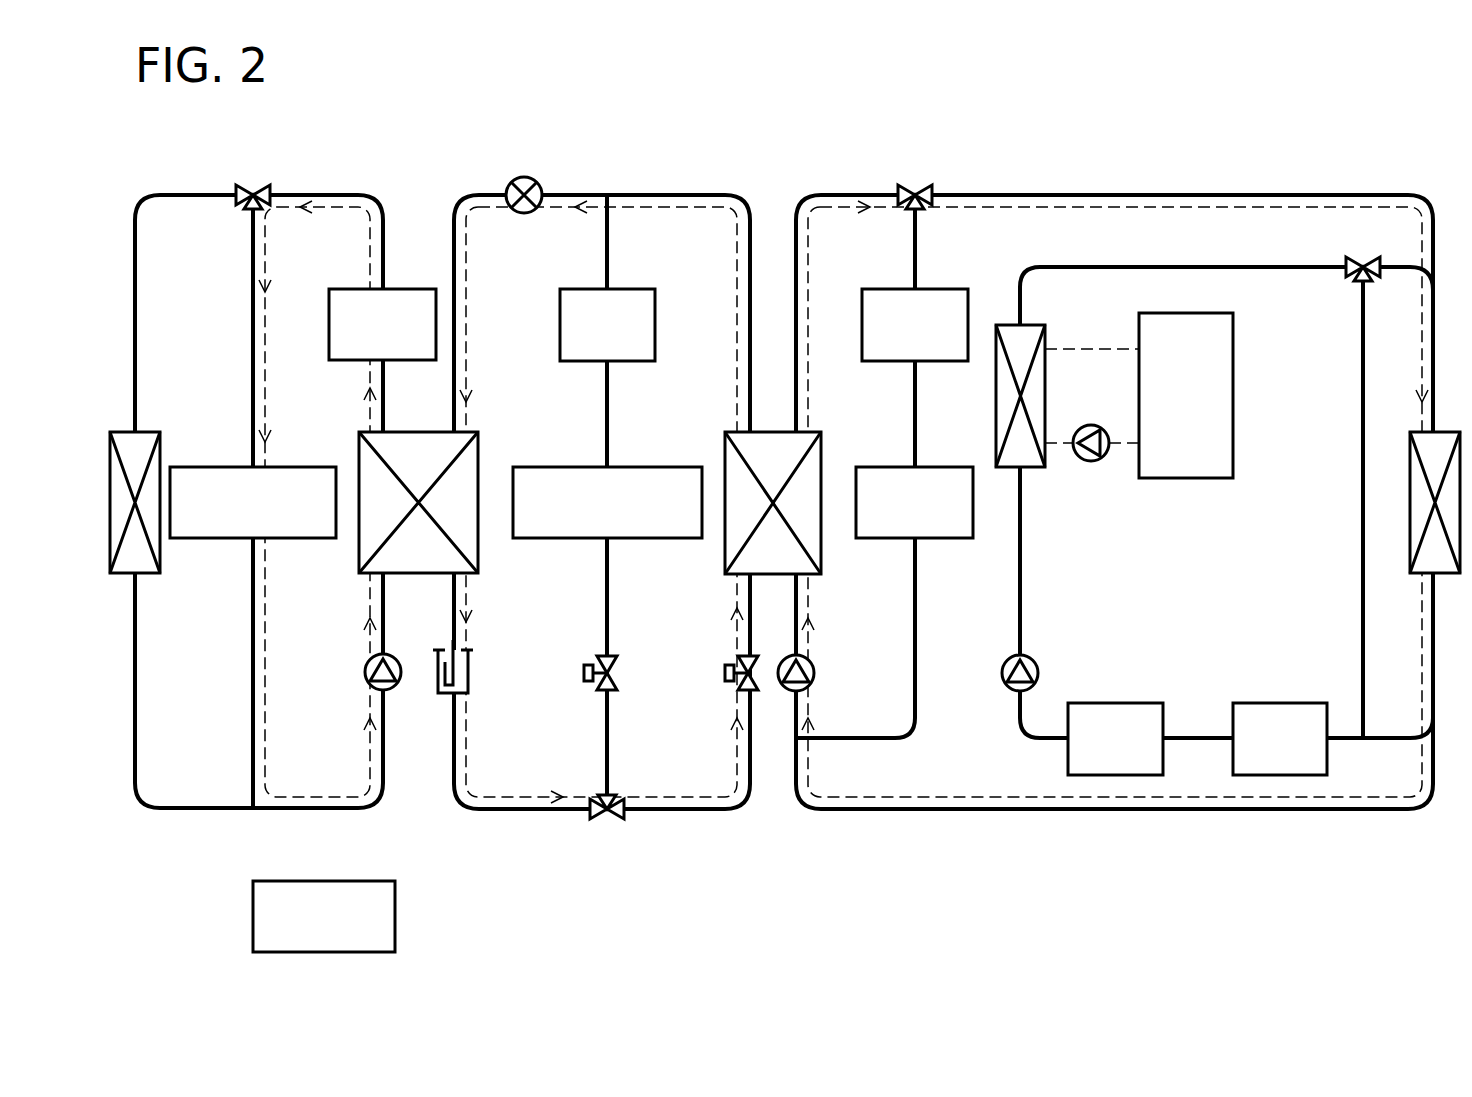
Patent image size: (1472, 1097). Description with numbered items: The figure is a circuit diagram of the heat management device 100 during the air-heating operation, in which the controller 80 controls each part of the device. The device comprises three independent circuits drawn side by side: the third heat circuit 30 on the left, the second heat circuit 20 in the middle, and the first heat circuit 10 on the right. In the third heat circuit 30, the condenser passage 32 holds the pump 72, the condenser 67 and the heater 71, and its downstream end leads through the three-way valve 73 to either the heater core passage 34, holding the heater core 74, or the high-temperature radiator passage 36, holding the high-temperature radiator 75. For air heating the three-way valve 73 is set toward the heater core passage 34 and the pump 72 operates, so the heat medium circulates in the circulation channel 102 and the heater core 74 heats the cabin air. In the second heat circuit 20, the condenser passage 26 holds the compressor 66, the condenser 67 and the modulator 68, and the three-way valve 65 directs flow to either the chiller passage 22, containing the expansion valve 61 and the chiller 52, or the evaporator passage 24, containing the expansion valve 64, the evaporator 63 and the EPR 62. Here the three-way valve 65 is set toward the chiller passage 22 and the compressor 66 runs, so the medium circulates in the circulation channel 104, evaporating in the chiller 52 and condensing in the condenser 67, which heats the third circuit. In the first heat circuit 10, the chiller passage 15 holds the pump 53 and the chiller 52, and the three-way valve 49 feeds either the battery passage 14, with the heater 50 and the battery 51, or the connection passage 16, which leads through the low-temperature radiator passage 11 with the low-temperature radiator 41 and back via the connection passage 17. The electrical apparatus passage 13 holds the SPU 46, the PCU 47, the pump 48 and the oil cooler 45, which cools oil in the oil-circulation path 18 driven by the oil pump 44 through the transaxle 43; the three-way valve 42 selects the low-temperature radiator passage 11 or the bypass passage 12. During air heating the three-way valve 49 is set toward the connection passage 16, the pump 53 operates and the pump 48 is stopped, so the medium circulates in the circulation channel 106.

The first heat circuit 10 is at (1203, 165).
The low-temperature radiator passage 11 is at (1432, 327).
The bypass passage 12 is at (1362, 432).
The electrical apparatus passage 13 is at (1019, 585).
The battery passage 14 is at (917, 415).
The chiller passage 15 is at (798, 272).
The connection passage 16 is at (1105, 193).
The connection passage 17 is at (1116, 810).
The oil-circulation path 18 is at (1080, 348).
The second heat circuit 20 is at (640, 165).
The chiller passage 22 is at (756, 240).
The evaporator passage 24 is at (608, 415).
The condenser passage 26 is at (456, 272).
The third heat circuit 30 is at (321, 165).
The condenser passage 32 is at (394, 243).
The heater core passage 34 is at (252, 330).
The high-temperature radiator passage 36 is at (136, 270).
The low-temperature radiator 41 is at (1424, 430).
The three-way valve 42 is at (1365, 256).
The transaxle 43 is at (1186, 479).
The oil pump 44 is at (1091, 462).
The oil cooler 45 is at (1010, 324).
The smart power unit (SPU) 46 is at (1280, 702).
The power control unit (PCU) 47 is at (1116, 702).
The pump 48 is at (1001, 673).
The three-way valve 49 is at (913, 184).
The heater 50 is at (938, 288).
The battery 51 is at (878, 466).
The chiller 52 is at (786, 575).
The pump 53 is at (815, 673).
The expansion valve 61 is at (738, 663).
The evaporator pressure regulator (EPR) 62 is at (582, 288).
The evaporator 63 is at (560, 466).
The expansion valve 64 is at (618, 680).
The three-way valve 65 is at (600, 820).
The compressor 66 is at (524, 177).
The condenser 67 is at (430, 575).
The modulator 68 is at (470, 665).
The heater 71 is at (357, 288).
The pump 72 is at (364, 672).
The three-way valve 73 is at (251, 184).
The heater core 74 is at (228, 465).
The high-temperature radiator 75 is at (145, 430).
The controller 80 is at (397, 918).
The heat management device 100 is at (182, 165).
The circulation channel 102 is at (315, 800).
The circulation channel 104 is at (522, 800).
The circulation channel 106 is at (932, 800).